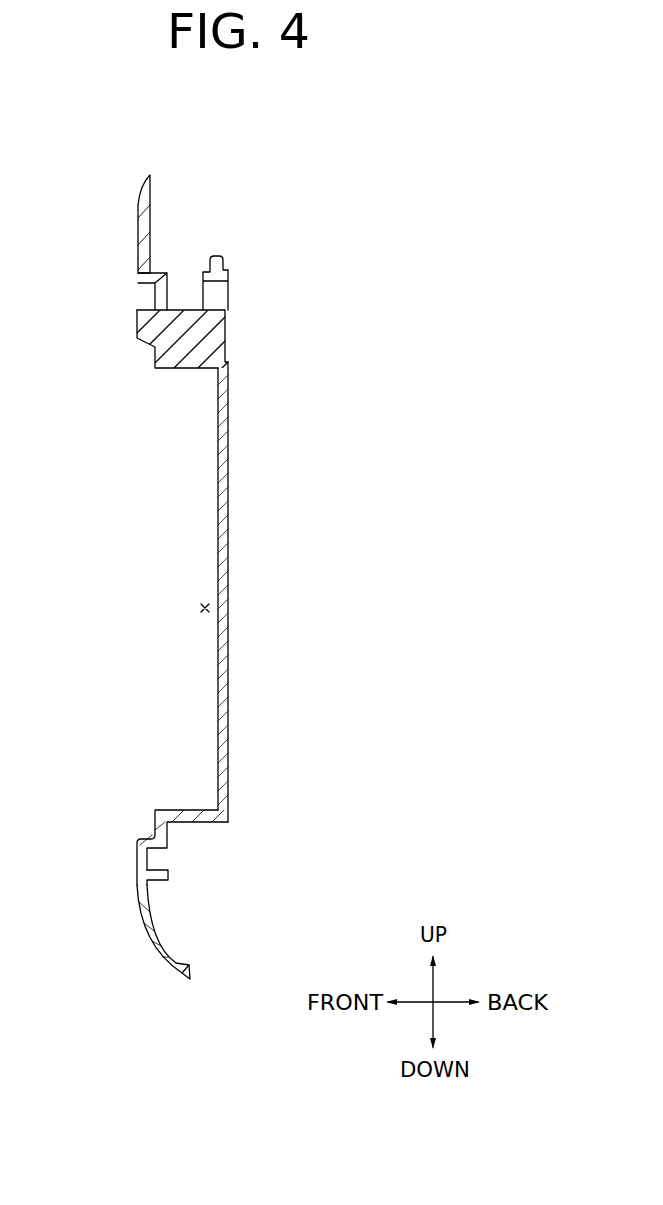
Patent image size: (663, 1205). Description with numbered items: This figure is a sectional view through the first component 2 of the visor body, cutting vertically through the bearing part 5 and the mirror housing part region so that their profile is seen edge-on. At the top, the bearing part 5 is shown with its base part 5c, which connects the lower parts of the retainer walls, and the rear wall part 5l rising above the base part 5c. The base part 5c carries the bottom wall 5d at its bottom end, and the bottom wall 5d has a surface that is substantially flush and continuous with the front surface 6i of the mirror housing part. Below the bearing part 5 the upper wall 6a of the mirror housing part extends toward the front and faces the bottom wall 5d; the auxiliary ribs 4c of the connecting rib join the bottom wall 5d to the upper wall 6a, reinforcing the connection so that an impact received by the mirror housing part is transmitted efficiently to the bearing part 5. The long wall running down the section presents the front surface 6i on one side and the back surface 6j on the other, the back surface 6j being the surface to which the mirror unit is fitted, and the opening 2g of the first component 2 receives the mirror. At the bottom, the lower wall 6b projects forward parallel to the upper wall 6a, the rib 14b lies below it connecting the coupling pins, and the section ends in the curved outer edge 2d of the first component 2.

The first component 2 is at (190, 665).
The outer edge 2d is at (162, 962).
The opening 2g is at (205, 608).
The auxiliary rib 4c is at (188, 362).
The bearing part 5 is at (173, 257).
The base part 5c is at (155, 297).
The bottom wall 5d is at (212, 318).
The rear wall part 5l is at (145, 213).
The upper wall 6a is at (165, 372).
The lower wall 6b is at (183, 810).
The front surface 6i is at (228, 645).
The back surface 6j is at (218, 552).
The rib 14b is at (170, 874).